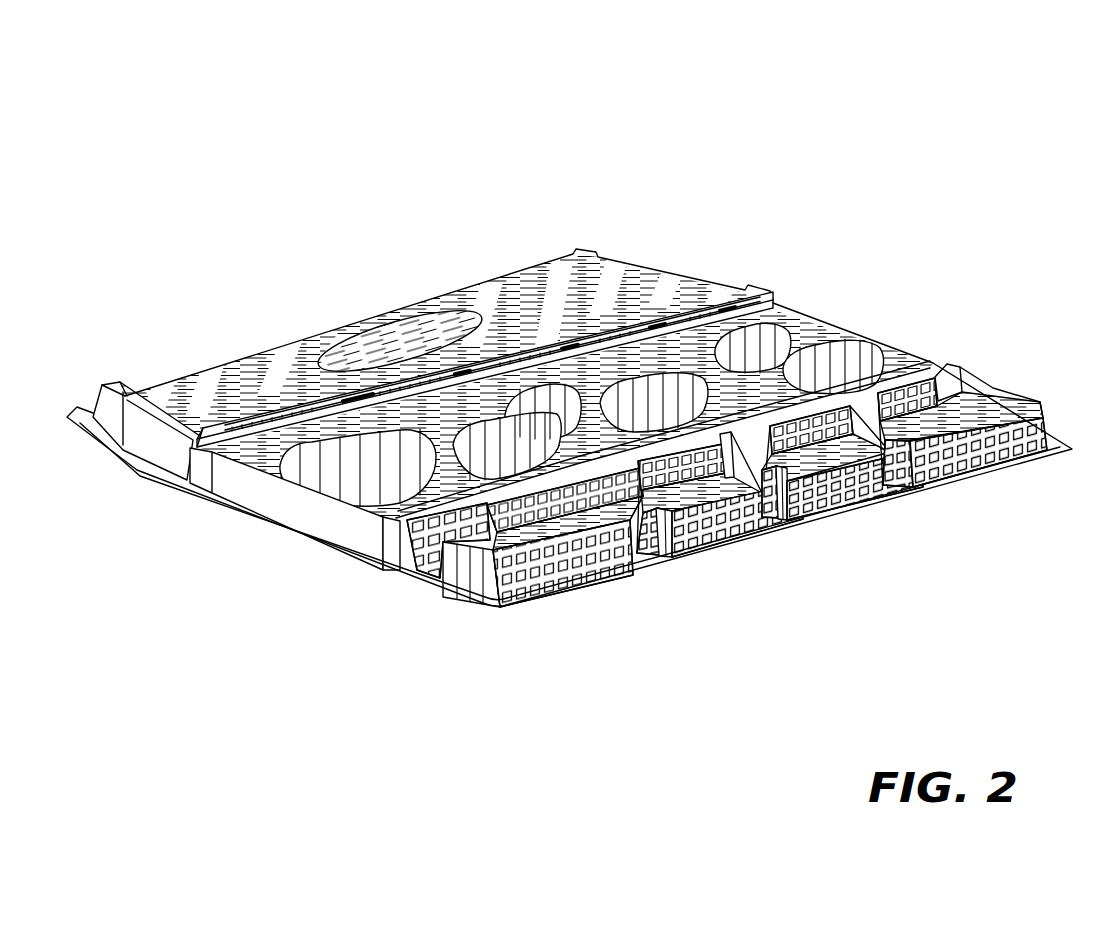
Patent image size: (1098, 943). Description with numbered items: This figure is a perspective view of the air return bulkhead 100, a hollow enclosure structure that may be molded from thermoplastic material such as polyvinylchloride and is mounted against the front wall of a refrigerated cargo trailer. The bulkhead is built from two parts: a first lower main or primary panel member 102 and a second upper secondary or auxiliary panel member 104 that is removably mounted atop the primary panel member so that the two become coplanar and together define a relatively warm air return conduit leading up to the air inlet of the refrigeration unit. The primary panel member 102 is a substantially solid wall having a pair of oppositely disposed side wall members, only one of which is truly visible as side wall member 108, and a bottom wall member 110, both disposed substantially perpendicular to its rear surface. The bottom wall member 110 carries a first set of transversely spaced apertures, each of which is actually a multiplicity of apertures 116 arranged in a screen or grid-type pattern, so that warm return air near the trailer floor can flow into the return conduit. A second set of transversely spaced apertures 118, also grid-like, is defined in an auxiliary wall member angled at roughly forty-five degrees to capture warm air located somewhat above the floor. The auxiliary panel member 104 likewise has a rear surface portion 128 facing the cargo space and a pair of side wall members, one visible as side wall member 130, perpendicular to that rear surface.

The air return bulkhead 100 is at (513, 172).
The first lower main or primary panel member 102 is at (569, 501).
The second upper secondary or auxiliary panel member 104 is at (437, 312).
The side wall member 108 is at (260, 487).
The bottom wall member 110 is at (505, 595).
The apertures 116 is at (723, 532).
The second set of transversely spaced apertures 118 is at (395, 535).
The rear surface portion 128 is at (285, 378).
The side wall member 130 is at (173, 448).